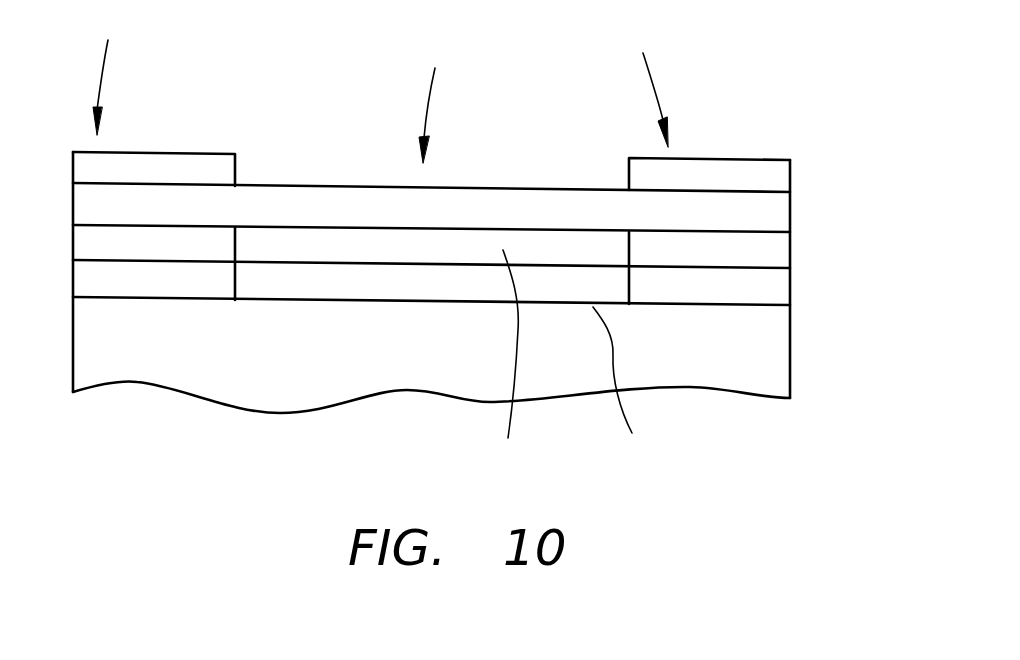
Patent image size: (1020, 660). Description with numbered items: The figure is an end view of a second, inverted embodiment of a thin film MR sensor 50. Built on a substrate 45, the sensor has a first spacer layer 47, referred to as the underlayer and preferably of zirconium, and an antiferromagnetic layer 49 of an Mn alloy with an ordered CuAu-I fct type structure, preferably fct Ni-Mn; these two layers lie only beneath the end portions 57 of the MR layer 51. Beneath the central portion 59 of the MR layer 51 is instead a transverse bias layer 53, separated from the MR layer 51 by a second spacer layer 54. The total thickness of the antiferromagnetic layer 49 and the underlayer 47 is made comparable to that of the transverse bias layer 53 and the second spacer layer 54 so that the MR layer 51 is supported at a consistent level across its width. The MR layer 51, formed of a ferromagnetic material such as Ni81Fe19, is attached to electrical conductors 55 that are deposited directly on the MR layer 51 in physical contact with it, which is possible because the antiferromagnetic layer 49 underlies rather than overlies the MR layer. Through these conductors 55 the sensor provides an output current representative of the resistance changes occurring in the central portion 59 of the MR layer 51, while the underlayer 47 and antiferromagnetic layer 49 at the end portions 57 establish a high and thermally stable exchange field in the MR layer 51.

The substrate 45 is at (790, 350).
The first spacer layer 47 is at (790, 293).
The antiferromagnetic layer 49 is at (790, 253).
The MR sensor 50 is at (156, 484).
The MR layer 51 is at (790, 215).
The transverse bias layer 53 is at (632, 381).
The second spacer layer 54 is at (511, 368).
The electrical conductors 55 is at (160, 152).
The end portions 57 is at (380, 74).
The central portion 59 is at (438, 96).